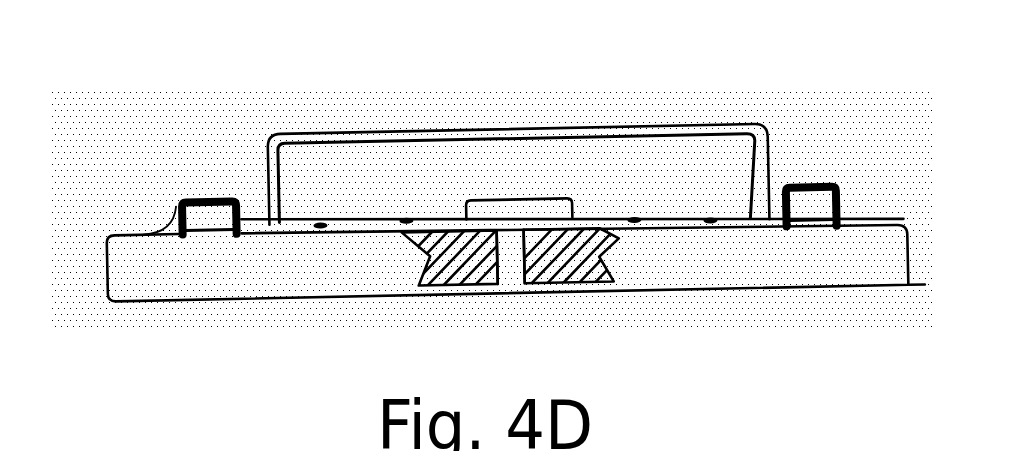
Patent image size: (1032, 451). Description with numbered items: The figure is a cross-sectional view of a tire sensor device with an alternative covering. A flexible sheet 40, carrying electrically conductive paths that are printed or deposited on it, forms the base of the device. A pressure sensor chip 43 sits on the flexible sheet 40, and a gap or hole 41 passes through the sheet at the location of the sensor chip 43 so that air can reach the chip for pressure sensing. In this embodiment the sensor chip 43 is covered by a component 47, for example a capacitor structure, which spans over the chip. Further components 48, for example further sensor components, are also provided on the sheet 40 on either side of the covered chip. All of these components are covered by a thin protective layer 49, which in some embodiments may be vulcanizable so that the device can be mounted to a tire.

The flexible sheet 40 is at (216, 264).
The gap or hole 41 is at (516, 260).
The pressure sensor chip 43 is at (549, 214).
The component 47 is at (688, 177).
The further components 48 is at (205, 219).
The thin protective layer 49 is at (486, 135).